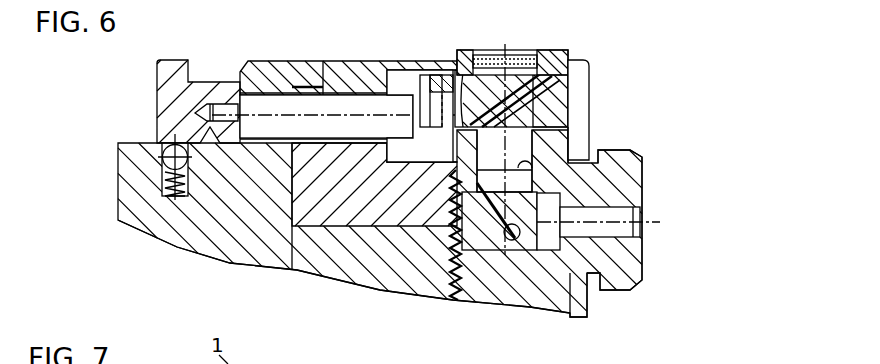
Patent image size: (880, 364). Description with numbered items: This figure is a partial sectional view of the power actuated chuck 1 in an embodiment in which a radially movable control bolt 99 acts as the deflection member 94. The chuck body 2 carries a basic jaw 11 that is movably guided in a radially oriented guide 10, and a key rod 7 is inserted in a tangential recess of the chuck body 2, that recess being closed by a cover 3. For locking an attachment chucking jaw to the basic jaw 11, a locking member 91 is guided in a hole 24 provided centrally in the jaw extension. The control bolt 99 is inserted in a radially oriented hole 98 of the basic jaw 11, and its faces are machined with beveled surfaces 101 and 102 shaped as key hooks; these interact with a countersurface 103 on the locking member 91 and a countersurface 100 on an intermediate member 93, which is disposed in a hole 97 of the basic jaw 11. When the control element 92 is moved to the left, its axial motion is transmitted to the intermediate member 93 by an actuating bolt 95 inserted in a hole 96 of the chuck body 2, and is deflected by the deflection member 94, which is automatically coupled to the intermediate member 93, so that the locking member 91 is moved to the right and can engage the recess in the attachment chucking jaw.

The power actuated chuck 1 is at (94, 217).
The chuck body 2 is at (330, 207).
The cover 3 is at (203, 227).
The key rod 7 is at (353, 263).
The guide 10 is at (580, 62).
The basic jaw 11 is at (548, 287).
The hole 24 is at (625, 192).
The locking member 91 is at (616, 237).
The control element 92 is at (172, 100).
The intermediate member 93 is at (452, 78).
The deflection member 94 is at (568, 118).
The actuating bolt 95 is at (340, 103).
The hole 96 is at (307, 137).
The hole 97 is at (558, 72).
The hole 98 is at (540, 177).
The control bolt 99 is at (432, 233).
The countersurface 100 is at (563, 78).
The beveled surface 101 is at (470, 90).
The beveled surface 102 is at (500, 285).
The countersurface 103 is at (512, 235).